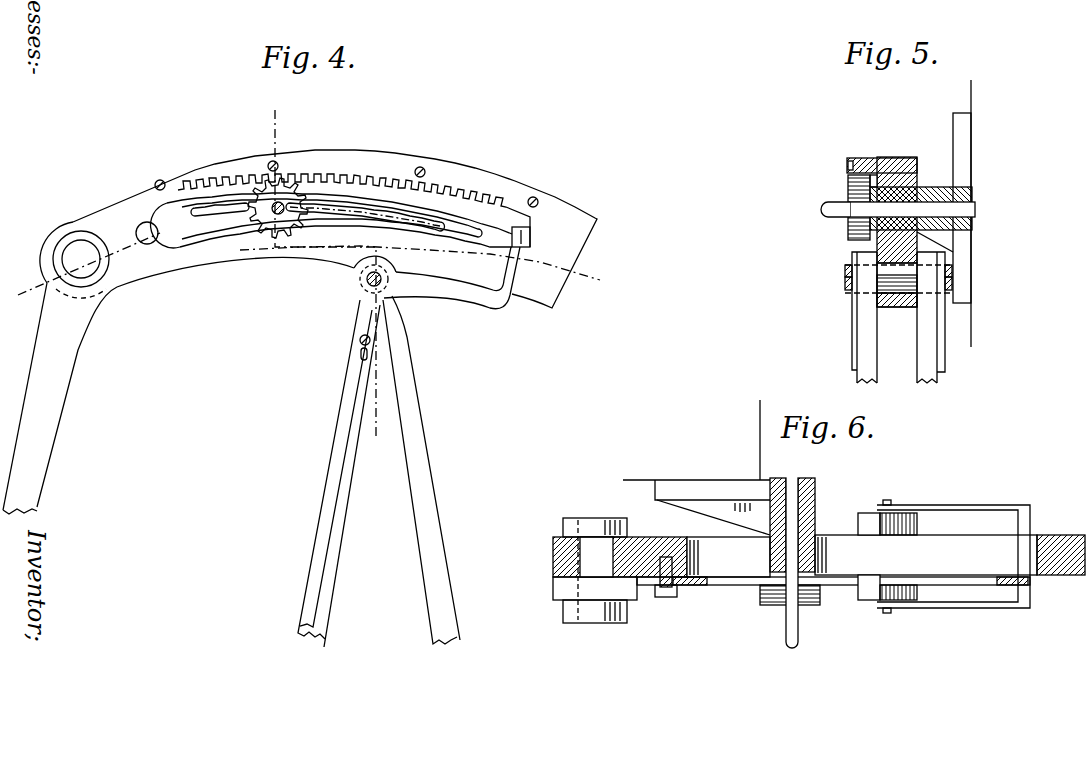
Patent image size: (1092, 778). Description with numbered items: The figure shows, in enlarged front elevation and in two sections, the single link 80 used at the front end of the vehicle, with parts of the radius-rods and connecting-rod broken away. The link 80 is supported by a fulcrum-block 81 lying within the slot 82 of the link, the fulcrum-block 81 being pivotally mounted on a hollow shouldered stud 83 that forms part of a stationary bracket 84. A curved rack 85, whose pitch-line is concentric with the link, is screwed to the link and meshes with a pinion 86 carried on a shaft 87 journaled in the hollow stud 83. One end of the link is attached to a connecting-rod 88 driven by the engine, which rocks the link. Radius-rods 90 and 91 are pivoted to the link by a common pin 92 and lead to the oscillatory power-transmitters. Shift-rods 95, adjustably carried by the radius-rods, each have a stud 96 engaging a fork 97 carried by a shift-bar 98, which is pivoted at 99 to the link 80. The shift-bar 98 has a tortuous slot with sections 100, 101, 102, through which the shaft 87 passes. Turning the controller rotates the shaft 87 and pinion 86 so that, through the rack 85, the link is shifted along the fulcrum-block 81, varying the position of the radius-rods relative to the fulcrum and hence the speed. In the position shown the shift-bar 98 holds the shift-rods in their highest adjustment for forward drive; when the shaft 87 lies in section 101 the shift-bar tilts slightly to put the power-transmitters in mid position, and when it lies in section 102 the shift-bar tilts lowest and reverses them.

In FIG. 4, the link 80 is at (312, 280).
In FIG. 5, the link 80 is at (893, 170).
In FIG. 6, the link 80 is at (1055, 533).
In FIG. 5, the fulcrum-block 81 is at (910, 158).
In FIG. 6, the fulcrum-block 81 is at (817, 552).
In FIG. 4, the slot 82 is at (495, 213).
In FIG. 6, the slot 82 is at (990, 547).
In FIG. 5, the hollow shouldered stud 83 is at (919, 188).
In FIG. 6, the hollow shouldered stud 83 is at (815, 506).
In FIG. 5, the stationary bracket 84 is at (962, 139).
In FIG. 6, the stationary bracket 84 is at (698, 492).
In FIG. 4, the curved rack 85 is at (360, 162).
In FIG. 4, the pinion 86 is at (296, 200).
In FIG. 5, the pinion 86 is at (848, 231).
In FIG. 6, the pinion 86 is at (790, 606).
In FIG. 4, the shaft 87 is at (279, 201).
In FIG. 5, the shaft 87 is at (962, 205).
In FIG. 6, the shaft 87 is at (817, 479).
In FIG. 4, the connecting-rod 88 is at (43, 431).
In FIG. 6, the connecting-rod 88 is at (570, 593).
In FIG. 4, the radius-rod 90 is at (342, 390).
In FIG. 5, the radius-rod 90 is at (862, 318).
In FIG. 4, the radius-rod 91 is at (400, 395).
In FIG. 5, the radius-rod 91 is at (928, 333).
In FIG. 5, the common pin 92 is at (900, 308).
In FIG. 4, the shift-rod 95 is at (340, 470).
In FIG. 5, the shift-rod 95 is at (852, 353).
In FIG. 6, the shift-rod 95 is at (897, 508).
In FIG. 4, the stud 96 is at (368, 285).
In FIG. 5, the stud 96 is at (845, 283).
In FIG. 6, the stud 96 is at (887, 500).
In FIG. 4, the fork 97 is at (442, 296).
In FIG. 5, the fork 97 is at (845, 268).
In FIG. 6, the fork 97 is at (933, 504).
In FIG. 4, the shift-bar 98 is at (213, 232).
In FIG. 5, the shift-bar 98 is at (850, 223).
In FIG. 6, the shift-bar 98 is at (700, 590).
In FIG. 4, the pivot 99 is at (140, 226).
In FIG. 6, the pivot 99 is at (663, 584).
In FIG. 4, the slotted section 100 is at (232, 214).
In FIG. 6, the slotted section 100 is at (733, 588).
In FIG. 4, the slotted section 101 is at (386, 207).
In FIG. 6, the slotted section 101 is at (885, 584).
In FIG. 4, the slotted section 102 is at (438, 220).
In FIG. 6, the slotted section 102 is at (943, 584).